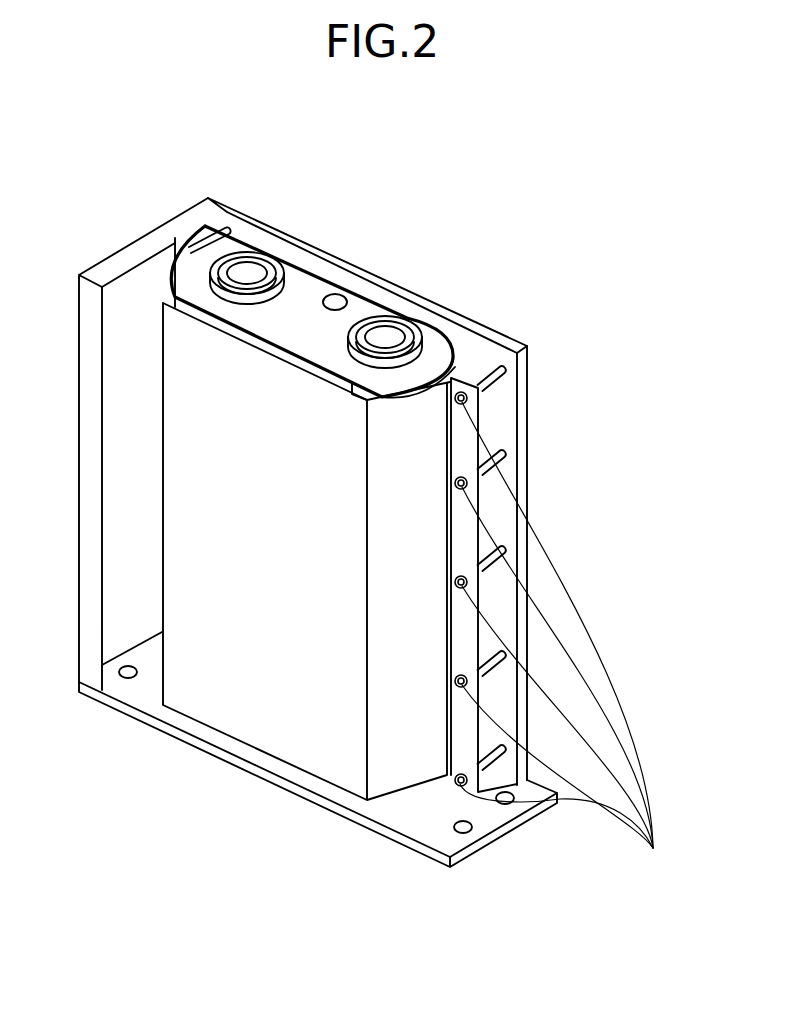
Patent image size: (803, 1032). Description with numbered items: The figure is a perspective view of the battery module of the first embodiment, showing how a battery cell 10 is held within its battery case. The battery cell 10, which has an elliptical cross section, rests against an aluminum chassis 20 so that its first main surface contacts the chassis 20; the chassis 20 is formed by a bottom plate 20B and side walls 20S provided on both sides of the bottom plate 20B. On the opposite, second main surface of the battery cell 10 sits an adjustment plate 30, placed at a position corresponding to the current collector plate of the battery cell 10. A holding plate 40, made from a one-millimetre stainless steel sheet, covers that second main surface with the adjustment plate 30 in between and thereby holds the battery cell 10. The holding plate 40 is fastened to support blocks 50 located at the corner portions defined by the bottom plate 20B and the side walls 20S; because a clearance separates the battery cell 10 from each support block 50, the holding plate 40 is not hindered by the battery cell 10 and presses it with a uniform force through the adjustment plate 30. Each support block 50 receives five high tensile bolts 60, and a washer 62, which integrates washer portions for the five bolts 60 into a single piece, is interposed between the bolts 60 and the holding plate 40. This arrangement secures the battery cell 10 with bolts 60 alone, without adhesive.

The battery cell 10 is at (360, 310).
The chassis 20 is at (303, 472).
The side walls 20S is at (145, 245).
The bottom plate 20B is at (265, 228).
The adjustment plate 30 is at (297, 353).
The holding plate 40 is at (247, 712).
The support blocks 50 is at (500, 441).
The bolts 60 is at (564, 638).
The washer 62 is at (470, 412).